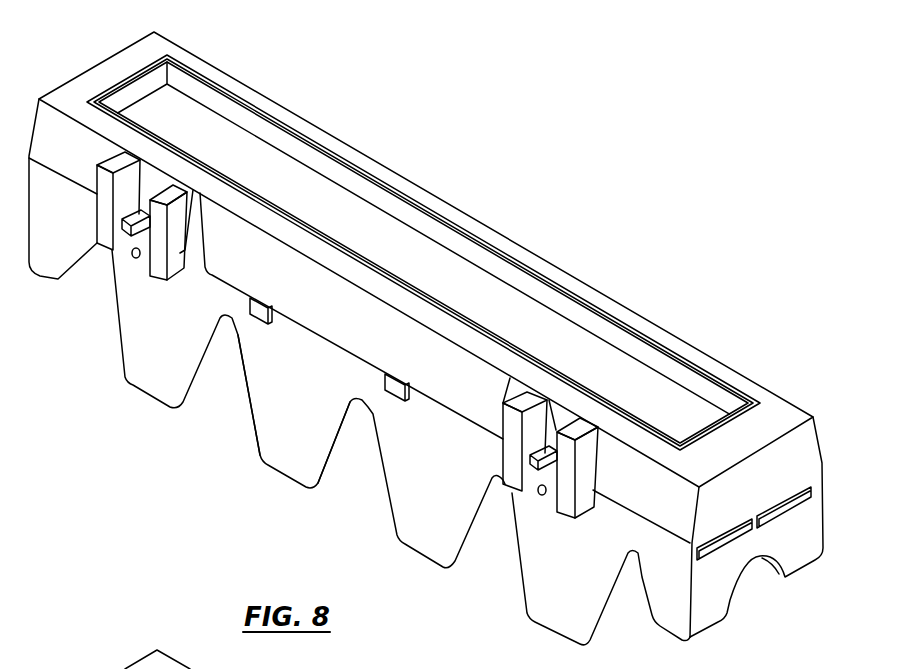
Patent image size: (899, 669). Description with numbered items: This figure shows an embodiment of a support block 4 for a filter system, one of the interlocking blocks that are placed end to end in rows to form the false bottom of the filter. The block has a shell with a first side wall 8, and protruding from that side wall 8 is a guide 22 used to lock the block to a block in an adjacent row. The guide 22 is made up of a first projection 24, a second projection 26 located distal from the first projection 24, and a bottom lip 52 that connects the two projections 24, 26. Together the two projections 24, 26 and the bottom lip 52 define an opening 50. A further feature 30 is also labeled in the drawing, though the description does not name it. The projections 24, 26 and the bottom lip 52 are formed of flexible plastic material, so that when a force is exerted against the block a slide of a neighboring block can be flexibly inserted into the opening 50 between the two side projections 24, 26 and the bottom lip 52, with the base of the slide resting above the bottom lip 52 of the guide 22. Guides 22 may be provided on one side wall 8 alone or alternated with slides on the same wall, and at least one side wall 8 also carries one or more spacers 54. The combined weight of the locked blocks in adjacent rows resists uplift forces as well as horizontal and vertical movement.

The support block 4 is at (523, 198).
The first side wall 8 is at (423, 198).
The guide 22 is at (180, 62).
The first projection 24 is at (105, 230).
The second projection 26 is at (157, 280).
The hole 30 is at (135, 260).
The opening 50 is at (148, 173).
The bottom lip 52 is at (124, 234).
The spacer 54 is at (335, 333).